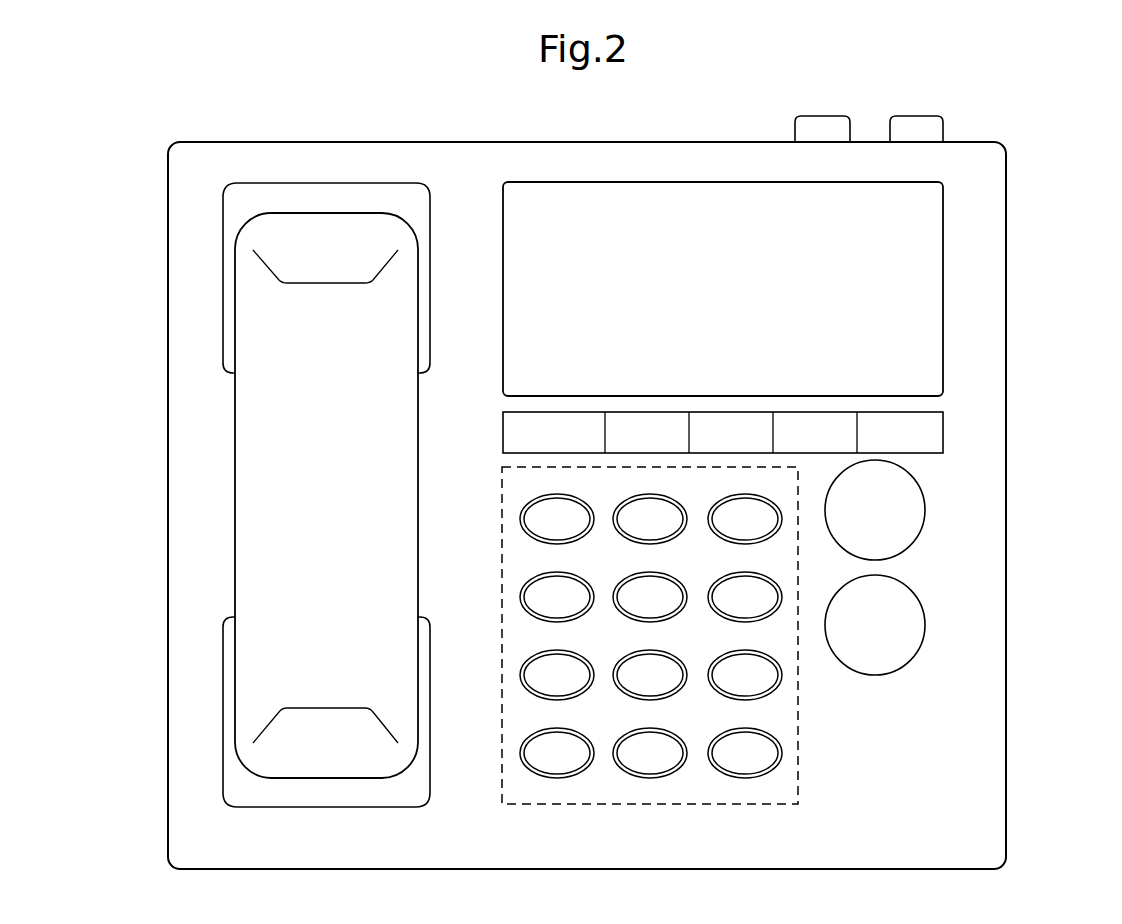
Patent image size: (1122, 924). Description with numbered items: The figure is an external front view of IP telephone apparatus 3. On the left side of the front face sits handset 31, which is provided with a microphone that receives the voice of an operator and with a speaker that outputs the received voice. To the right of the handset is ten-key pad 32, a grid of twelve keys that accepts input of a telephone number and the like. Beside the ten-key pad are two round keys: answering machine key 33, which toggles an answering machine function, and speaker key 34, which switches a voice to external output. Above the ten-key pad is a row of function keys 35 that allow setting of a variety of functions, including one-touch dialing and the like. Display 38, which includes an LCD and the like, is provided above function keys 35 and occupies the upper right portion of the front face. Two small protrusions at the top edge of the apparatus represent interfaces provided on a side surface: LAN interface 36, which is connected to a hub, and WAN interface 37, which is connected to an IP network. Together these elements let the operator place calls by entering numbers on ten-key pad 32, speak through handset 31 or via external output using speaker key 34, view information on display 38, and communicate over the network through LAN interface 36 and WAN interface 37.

The IP telephone apparatus 3 is at (353, 110).
The handset 31 is at (255, 446).
The ten-key pad 32 is at (799, 758).
The answering machine key 33 is at (925, 522).
The speaker key 34 is at (925, 634).
The function keys 35 is at (930, 432).
The LAN interface 36 is at (943, 124).
The WAN interface 37 is at (795, 124).
The display 38 is at (932, 284).